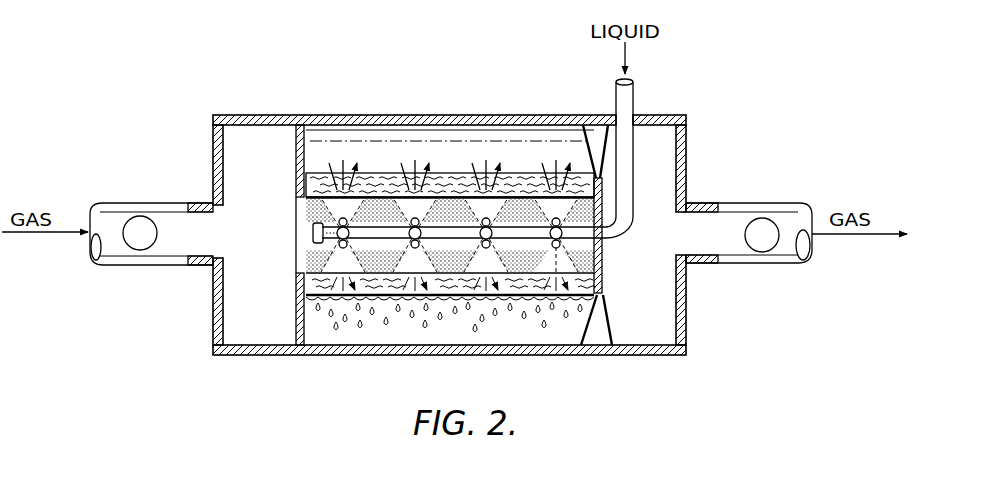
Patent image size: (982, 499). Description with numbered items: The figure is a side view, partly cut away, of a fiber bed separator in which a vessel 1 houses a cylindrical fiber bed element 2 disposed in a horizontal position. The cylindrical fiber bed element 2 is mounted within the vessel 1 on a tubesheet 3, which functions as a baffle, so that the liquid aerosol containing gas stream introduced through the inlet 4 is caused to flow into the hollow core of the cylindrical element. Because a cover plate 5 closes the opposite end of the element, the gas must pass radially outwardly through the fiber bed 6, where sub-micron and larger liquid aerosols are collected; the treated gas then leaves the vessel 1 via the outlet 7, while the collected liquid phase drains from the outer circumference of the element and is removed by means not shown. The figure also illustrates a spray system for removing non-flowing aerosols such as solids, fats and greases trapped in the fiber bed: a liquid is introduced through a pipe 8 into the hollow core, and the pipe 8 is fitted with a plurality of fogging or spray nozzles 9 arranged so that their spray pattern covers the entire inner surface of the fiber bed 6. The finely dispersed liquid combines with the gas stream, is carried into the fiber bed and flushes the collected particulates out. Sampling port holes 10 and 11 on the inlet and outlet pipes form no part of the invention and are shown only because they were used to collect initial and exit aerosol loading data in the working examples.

The vessel 1 is at (400, 115).
The cylindrical fiber bed element 2 is at (450, 173).
The tubesheet 3 is at (297, 149).
The inlet 4 is at (160, 203).
The cover plate 5 is at (603, 257).
The fiber bed 6 is at (378, 185).
The outlet 7 is at (740, 203).
The pipe 8 is at (634, 98).
The fogging or spray nozzles 9 is at (410, 243).
The sampling port hole 10 is at (143, 216).
The sampling port hole 11 is at (762, 218).